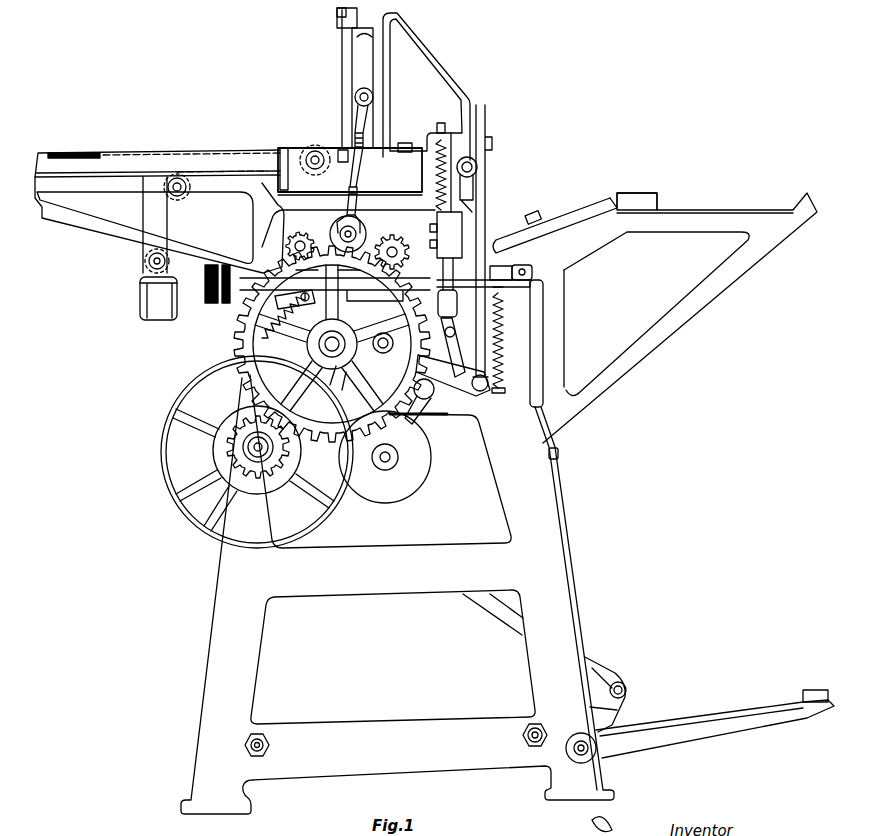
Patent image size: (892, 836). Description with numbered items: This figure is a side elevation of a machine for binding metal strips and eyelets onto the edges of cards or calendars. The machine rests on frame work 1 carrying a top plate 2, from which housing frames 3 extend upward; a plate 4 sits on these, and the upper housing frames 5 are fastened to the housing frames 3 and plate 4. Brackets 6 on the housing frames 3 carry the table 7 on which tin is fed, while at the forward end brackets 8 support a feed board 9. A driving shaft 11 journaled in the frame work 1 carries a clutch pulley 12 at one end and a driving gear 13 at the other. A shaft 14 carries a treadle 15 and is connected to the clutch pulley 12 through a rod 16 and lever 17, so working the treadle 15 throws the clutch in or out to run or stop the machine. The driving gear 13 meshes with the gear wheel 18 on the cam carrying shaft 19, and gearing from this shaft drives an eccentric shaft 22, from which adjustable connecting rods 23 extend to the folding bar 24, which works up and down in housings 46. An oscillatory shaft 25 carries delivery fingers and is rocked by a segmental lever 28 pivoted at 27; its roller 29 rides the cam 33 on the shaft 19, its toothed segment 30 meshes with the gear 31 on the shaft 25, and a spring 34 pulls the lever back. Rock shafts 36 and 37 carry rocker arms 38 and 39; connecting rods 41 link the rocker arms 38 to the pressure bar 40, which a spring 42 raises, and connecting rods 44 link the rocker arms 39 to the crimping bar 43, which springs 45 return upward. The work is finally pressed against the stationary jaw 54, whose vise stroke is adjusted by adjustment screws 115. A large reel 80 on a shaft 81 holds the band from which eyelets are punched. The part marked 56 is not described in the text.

The frame work 1 is at (553, 587).
The top plate 2 is at (566, 297).
The housing frames 3 is at (411, 200).
The plate 4 is at (288, 183).
The upper housing frames 5 is at (454, 77).
The brackets 6 is at (95, 228).
The table 7 is at (123, 167).
The brackets 8 is at (680, 310).
The feed board 9 is at (582, 213).
The driving shaft 11 is at (254, 455).
The clutch pulley 12 is at (160, 448).
The driving gear 13 is at (258, 456).
The shaft 14 is at (578, 753).
The treadle 15 is at (697, 720).
The rod 16 is at (497, 608).
The lever 17 is at (624, 692).
The gear wheel 18 is at (243, 334).
The shaft 19 is at (330, 345).
The eccentric shaft 22 is at (362, 232).
The adjustable connecting rods 23 is at (346, 150).
The folding bar 24 is at (360, 68).
The oscillatory shaft 25 is at (396, 250).
The pivot 27 is at (346, 386).
The segmental lever 28 is at (335, 290).
The roller 29 is at (307, 272).
The toothed segment 30 is at (349, 272).
The gear 31 is at (408, 255).
The cam 33 is at (324, 383).
The spring 34 is at (288, 312).
The rock shaft 36 is at (382, 348).
The rock shaft 37 is at (434, 404).
The rocker arms 38 is at (436, 338).
The rocker arms 39 is at (459, 398).
The pressure bar 40 is at (453, 237).
The connecting rods 41 is at (490, 300).
The spring 42 is at (448, 156).
The crimping bar 43 is at (478, 167).
The connecting rods 44 is at (496, 370).
The springs 45 is at (494, 338).
The housings 46 is at (373, 33).
The stationary jaw 54 is at (533, 271).
The cam 56 is at (305, 240).
The reel 80 is at (411, 491).
The shaft 81 is at (391, 459).
The adjustment screws 115 is at (206, 300).